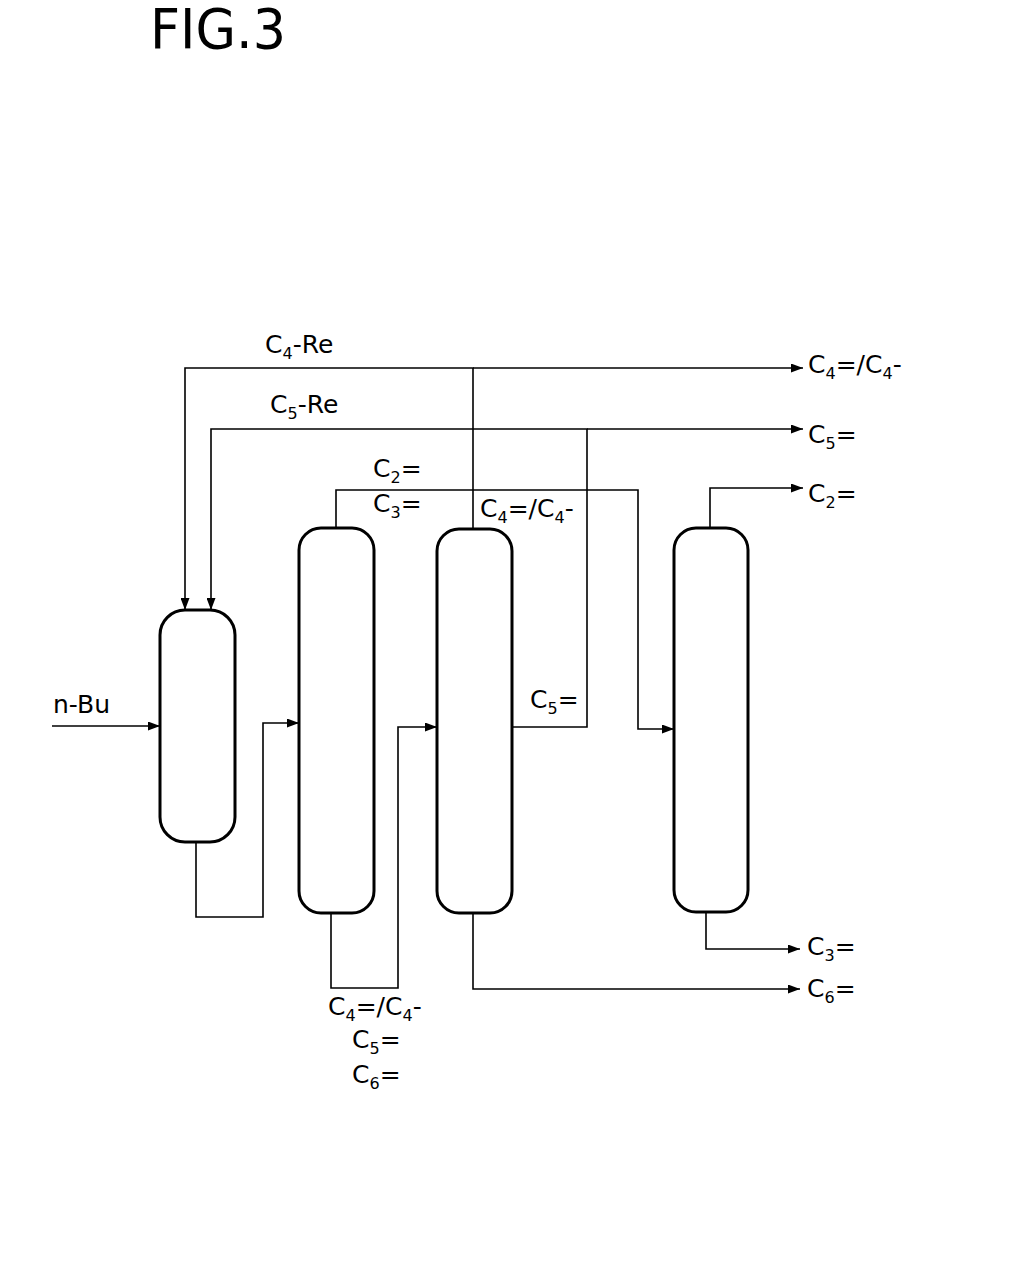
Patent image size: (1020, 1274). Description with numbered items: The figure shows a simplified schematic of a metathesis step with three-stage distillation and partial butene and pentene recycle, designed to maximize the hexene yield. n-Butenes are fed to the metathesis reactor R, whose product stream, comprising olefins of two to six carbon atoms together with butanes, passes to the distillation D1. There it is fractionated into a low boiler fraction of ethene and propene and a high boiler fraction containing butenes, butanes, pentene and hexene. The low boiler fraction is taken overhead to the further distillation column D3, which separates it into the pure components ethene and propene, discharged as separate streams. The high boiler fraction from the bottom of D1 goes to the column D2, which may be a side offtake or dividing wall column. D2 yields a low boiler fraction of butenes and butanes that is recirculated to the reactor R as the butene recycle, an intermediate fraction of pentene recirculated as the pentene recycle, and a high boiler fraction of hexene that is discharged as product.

The metathesis reactor R is at (197, 726).
The distillation D1 is at (336, 720).
The column D2 is at (474, 721).
The further distillation column D3 is at (711, 720).